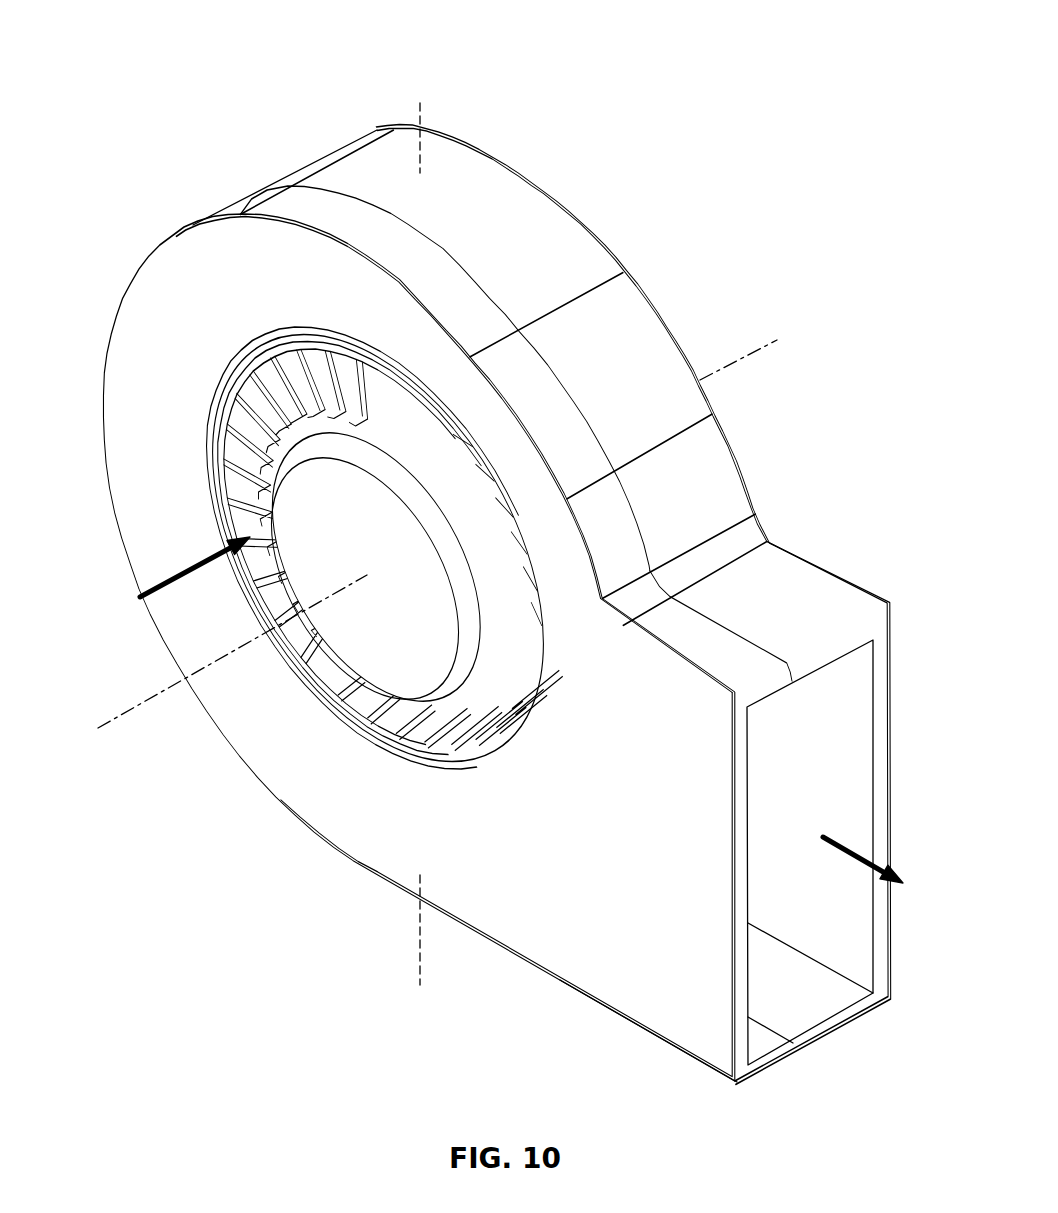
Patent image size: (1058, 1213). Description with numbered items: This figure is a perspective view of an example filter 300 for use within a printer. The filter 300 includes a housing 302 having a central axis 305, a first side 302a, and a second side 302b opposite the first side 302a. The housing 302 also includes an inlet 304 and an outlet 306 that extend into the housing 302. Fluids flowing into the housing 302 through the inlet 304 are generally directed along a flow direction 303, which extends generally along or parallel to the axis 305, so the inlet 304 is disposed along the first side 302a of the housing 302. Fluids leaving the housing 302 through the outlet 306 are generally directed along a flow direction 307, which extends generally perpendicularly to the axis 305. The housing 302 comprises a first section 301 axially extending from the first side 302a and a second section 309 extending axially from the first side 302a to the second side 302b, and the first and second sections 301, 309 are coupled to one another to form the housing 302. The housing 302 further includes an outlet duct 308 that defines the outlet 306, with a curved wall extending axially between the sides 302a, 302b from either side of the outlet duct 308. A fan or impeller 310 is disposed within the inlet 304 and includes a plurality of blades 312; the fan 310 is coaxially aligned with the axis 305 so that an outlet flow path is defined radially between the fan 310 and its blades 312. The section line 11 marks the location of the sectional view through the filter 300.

The filter 300 is at (138, 188).
The first section 301 is at (628, 987).
The housing 302 is at (614, 236).
The first side 302a is at (136, 385).
The second side 302b is at (757, 471).
The flow direction 303 is at (160, 586).
The inlet 304 is at (195, 434).
The central axis 305 is at (738, 360).
The outlet 306 is at (809, 1017).
The flow direction 307 is at (867, 852).
The outlet duct 308 is at (790, 565).
The second section 309 is at (823, 600).
The fan 310 is at (383, 657).
The blades 312 is at (268, 375).
The section line 11- 11 is at (420, 103).